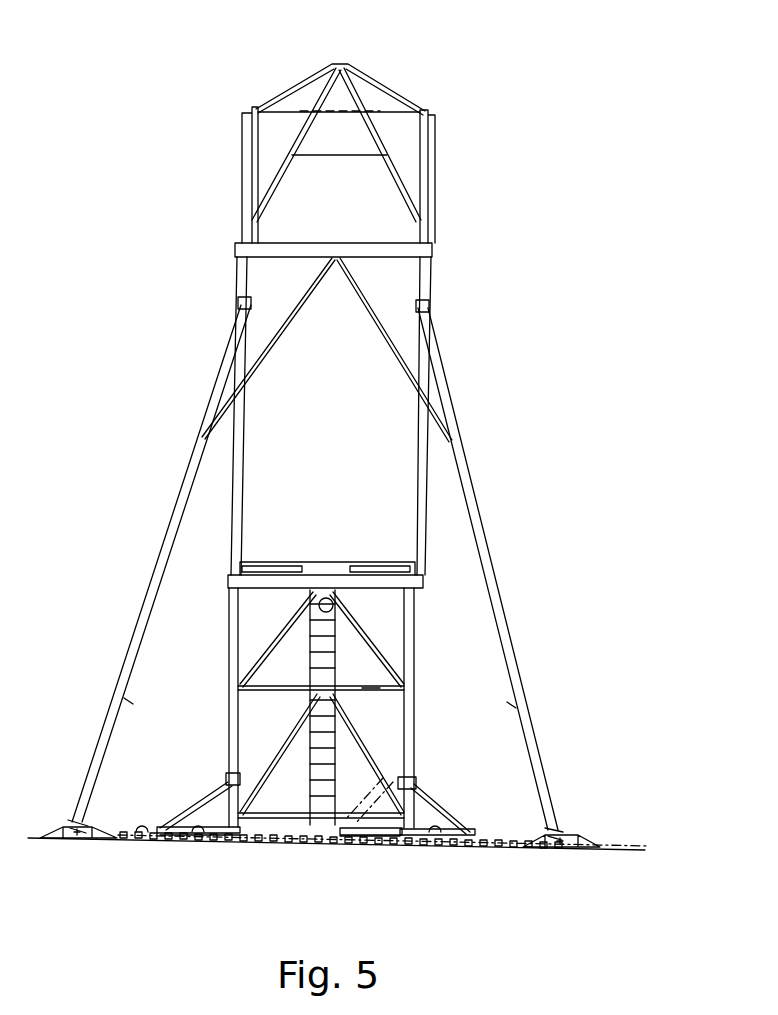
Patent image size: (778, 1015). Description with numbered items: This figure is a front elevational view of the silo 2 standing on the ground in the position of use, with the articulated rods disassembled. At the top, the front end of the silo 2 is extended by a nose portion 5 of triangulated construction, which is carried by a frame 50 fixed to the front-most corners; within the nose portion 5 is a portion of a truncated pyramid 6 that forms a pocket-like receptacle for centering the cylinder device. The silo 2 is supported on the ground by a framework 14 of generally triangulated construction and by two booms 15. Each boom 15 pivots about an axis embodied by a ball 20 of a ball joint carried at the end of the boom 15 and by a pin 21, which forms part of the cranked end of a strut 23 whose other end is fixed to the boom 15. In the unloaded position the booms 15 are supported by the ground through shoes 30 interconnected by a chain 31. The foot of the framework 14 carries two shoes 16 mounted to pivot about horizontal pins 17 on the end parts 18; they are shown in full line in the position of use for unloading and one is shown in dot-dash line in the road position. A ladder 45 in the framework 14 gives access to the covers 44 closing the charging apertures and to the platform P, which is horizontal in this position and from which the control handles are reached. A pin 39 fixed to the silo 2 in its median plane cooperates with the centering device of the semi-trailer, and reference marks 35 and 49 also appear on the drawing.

The nose portion 5 is at (345, 63).
The frame 50 is at (430, 110).
The portion of a truncated pyramid 6 is at (337, 138).
The pin 21 is at (328, 251).
The silo 2 is at (416, 272).
The strut 23 is at (270, 352).
The ball 20 is at (249, 300).
The boom 15 is at (138, 642).
The leg connection marks 35 is at (129, 702).
The shoe 30 is at (63, 848).
The intermediate platform 49 is at (258, 507).
The cover 44 is at (303, 570).
The framework 14 is at (415, 746).
The pin 39 is at (331, 606).
The platform P is at (372, 690).
The ladder 45 is at (334, 766).
The end part 18 is at (247, 814).
The horizontal pin 17 is at (162, 826).
The chain 31 is at (133, 848).
The shoe 16 is at (190, 846).